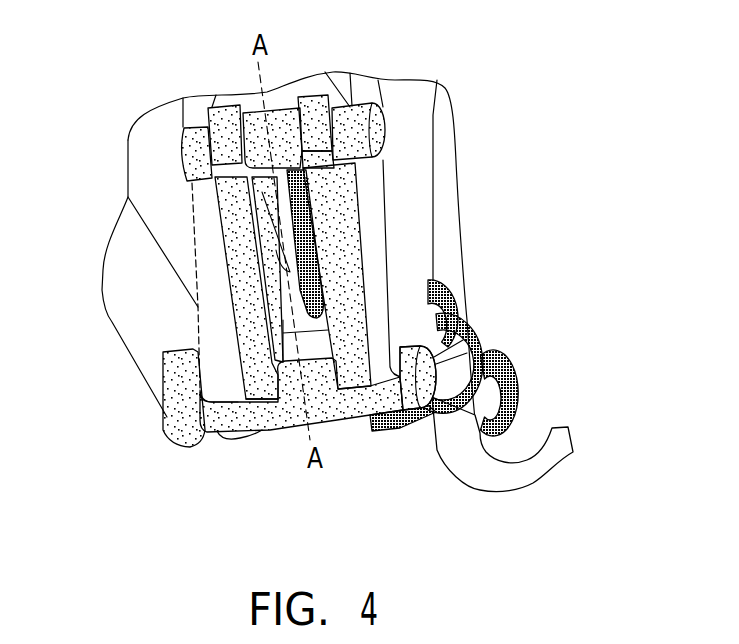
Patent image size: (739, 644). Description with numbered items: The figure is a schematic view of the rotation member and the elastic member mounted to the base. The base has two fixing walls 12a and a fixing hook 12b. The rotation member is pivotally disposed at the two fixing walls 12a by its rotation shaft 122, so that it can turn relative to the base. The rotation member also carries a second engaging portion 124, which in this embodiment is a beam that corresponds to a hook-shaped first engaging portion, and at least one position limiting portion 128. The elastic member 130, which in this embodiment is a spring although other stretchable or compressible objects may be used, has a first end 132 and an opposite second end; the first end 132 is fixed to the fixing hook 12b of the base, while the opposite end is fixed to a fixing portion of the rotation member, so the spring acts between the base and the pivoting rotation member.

The fixing walls 12a is at (222, 383).
The fixing hook 12b is at (465, 460).
The rotation shaft 122 is at (467, 342).
The second engaging portion 124 is at (287, 151).
The position limiting portion 128 is at (199, 157).
The elastic member 130 is at (463, 323).
The first end 132 is at (503, 379).